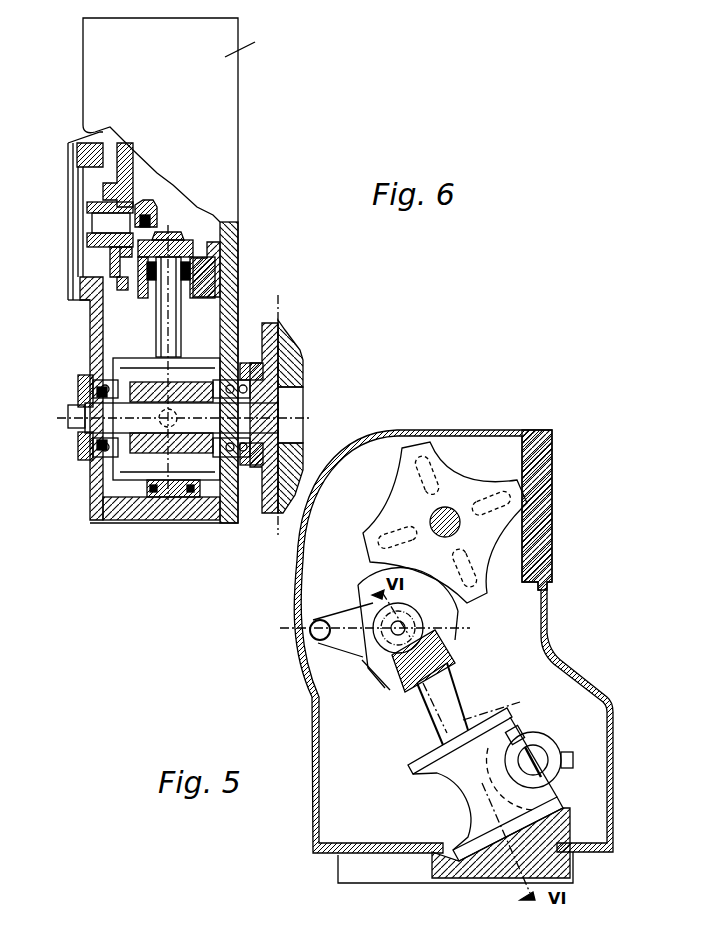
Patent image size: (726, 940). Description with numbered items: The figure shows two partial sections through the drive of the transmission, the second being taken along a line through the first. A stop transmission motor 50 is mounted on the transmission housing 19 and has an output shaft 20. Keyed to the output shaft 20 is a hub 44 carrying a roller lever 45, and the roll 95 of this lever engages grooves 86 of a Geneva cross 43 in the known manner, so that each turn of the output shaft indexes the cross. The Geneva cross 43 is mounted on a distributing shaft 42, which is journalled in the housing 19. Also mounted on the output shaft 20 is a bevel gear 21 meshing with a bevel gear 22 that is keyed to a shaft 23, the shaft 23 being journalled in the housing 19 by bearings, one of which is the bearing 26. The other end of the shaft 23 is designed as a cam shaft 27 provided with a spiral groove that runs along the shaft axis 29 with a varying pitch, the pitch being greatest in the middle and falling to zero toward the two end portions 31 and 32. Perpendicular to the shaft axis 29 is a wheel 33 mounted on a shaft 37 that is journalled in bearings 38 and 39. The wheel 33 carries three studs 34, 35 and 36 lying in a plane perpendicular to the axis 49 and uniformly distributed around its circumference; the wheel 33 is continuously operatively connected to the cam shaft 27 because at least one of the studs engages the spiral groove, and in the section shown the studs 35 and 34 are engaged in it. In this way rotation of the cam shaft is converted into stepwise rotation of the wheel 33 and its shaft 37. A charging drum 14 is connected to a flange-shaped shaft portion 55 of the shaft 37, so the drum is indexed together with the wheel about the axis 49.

In FIG. 6, the charging drum 14 is at (290, 360).
In FIG. 5, the transmission housing 19 is at (553, 458).
In FIG. 6, the output shaft 20 is at (97, 222).
In FIG. 5, the output shaft 20 is at (410, 622).
In FIG. 6, the bevel gear 21 is at (142, 200).
In FIG. 5, the bevel gear 22 is at (363, 665).
In FIG. 6, the shaft 23 is at (182, 335).
In FIG. 5, the shaft 23 is at (427, 693).
In FIG. 6, the bearing 26 is at (142, 523).
In FIG. 5, the bearing 26 is at (497, 857).
In FIG. 5, the cam shaft 27 is at (482, 783).
In FIG. 6, the shaft axis 29 is at (168, 320).
In FIG. 5, the shaft axis 29 is at (445, 703).
In FIG. 5, the end portion 31 is at (480, 840).
In FIG. 5, the end portion 32 is at (422, 772).
In FIG. 6, the wheel 33 is at (172, 513).
In FIG. 5, the wheel 33 is at (553, 747).
In FIG. 5, the stud 34 is at (530, 817).
In FIG. 5, the stud 35 is at (520, 730).
In FIG. 6, the stud 36 is at (92, 508).
In FIG. 5, the stud 36 is at (573, 758).
In FIG. 6, the shaft 37 is at (245, 408).
In FIG. 5, the shaft 37 is at (543, 747).
In FIG. 6, the bearing 38 is at (237, 523).
In FIG. 6, the bearing 39 is at (88, 458).
In FIG. 5, the distributing shaft 42 is at (460, 528).
In FIG. 6, the Geneva cross 43 is at (123, 150).
In FIG. 5, the Geneva cross 43 is at (467, 493).
In FIG. 5, the hub 44 is at (373, 678).
In FIG. 6, the roller lever 45 is at (92, 304).
In FIG. 5, the roller lever 45 is at (343, 637).
In FIG. 6, the axis 49 is at (315, 418).
In FIG. 5, the axis 49 is at (535, 764).
In FIG. 6, the stop transmission motor 50 is at (58, 162).
In FIG. 6, the flange-shaped shaft portion 55 is at (283, 333).
In FIG. 5, the grooves 86 is at (432, 497).
In FIG. 6, the roll 95 is at (123, 291).
In FIG. 5, the roll 95 is at (313, 625).